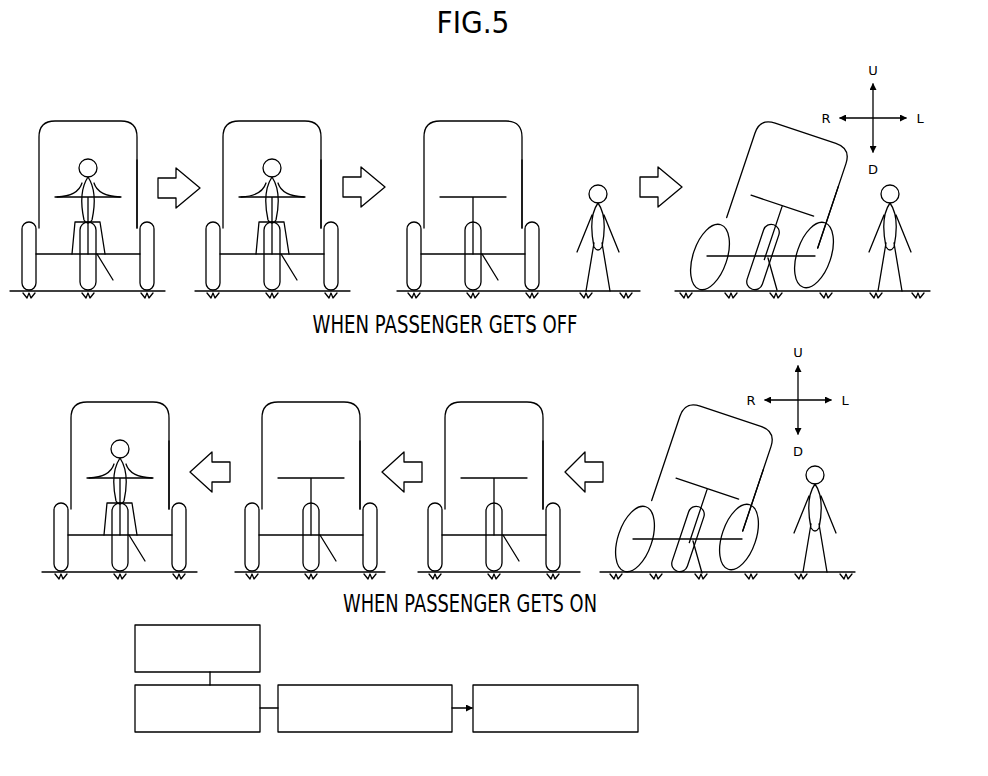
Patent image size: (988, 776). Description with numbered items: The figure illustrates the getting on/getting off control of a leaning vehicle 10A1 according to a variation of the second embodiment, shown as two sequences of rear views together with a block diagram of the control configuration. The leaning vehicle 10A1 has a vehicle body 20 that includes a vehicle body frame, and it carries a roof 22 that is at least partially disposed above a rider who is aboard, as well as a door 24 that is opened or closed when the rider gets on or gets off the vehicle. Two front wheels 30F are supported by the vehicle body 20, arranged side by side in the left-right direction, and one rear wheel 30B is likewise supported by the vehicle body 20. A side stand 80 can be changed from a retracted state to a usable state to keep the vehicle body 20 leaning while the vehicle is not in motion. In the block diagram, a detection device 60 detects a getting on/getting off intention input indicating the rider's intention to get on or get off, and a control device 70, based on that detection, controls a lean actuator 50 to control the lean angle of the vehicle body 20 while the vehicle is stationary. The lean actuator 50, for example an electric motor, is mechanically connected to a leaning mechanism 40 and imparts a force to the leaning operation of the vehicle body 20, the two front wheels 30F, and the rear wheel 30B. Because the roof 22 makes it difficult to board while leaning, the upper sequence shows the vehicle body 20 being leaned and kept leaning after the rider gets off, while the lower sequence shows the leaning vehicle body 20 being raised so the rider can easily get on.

The leaning vehicle 10A1 is at (42, 122).
The roof 22 is at (106, 121).
The door 24 is at (140, 160).
The vehicle body 20 is at (91, 208).
The front wheels 30F is at (36, 246).
The rear wheel 30B is at (78, 270).
The side stand 80 is at (291, 278).
The detection device 60 is at (224, 625).
The control device 70 is at (214, 733).
The lean actuator 50 is at (396, 685).
The leaning mechanism 40 is at (523, 685).